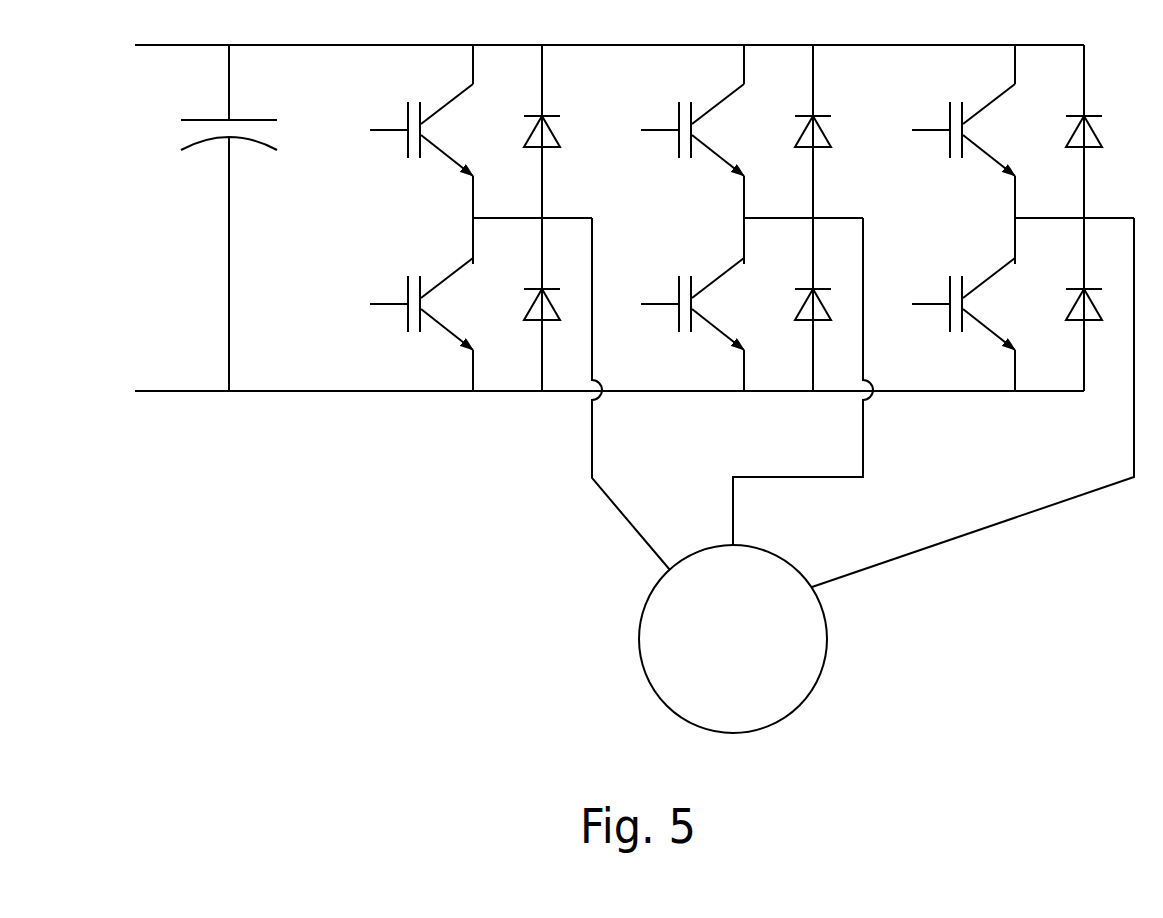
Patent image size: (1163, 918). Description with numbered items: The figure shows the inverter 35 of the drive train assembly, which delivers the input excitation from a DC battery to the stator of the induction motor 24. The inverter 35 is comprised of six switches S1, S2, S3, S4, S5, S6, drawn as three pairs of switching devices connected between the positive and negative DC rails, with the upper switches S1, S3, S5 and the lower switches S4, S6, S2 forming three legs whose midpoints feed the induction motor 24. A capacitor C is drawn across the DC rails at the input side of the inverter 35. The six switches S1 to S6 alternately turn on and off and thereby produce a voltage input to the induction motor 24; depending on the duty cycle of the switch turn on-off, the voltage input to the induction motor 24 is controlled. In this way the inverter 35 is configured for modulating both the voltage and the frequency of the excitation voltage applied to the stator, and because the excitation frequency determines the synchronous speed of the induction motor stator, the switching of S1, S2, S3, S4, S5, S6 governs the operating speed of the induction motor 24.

The induction motor 24 is at (744, 654).
The inverter 35 is at (634, 398).
The DC link capacitor C is at (229, 218).
The switch S1 is at (407, 130).
The switch S2 is at (949, 304).
The switch S3 is at (678, 130).
The switch S4 is at (407, 304).
The switch S5 is at (949, 130).
The switch S6 is at (678, 304).